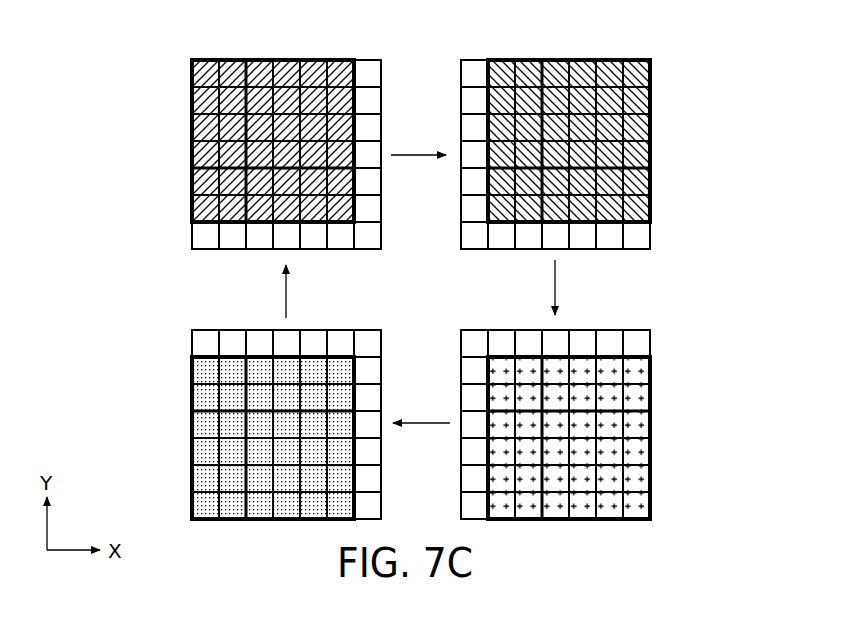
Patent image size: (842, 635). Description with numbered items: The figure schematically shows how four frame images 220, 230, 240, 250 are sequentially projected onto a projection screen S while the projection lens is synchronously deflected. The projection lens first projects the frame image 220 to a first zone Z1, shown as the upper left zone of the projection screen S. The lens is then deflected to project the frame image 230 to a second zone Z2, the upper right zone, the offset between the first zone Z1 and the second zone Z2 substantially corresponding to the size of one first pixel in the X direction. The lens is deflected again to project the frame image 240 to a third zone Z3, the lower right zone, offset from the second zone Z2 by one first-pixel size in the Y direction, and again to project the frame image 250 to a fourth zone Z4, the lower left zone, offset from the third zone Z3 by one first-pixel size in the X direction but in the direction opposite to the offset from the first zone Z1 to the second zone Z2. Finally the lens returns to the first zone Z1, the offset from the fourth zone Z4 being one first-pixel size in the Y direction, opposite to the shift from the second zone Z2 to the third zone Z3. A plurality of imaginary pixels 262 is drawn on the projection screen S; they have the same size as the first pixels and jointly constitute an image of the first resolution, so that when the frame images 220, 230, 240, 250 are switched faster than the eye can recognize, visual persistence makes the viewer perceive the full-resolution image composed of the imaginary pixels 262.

The projection screen S is at (190, 233).
The first zone Z1 is at (218, 44).
The second zone Z2 is at (623, 45).
The third zone Z3 is at (623, 527).
The fourth zone Z4 is at (220, 526).
The frame image 220 is at (190, 70).
The frame image 230 is at (651, 71).
The frame image 240 is at (652, 500).
The frame image 250 is at (190, 498).
The imaginary pixels 262 is at (367, 250).